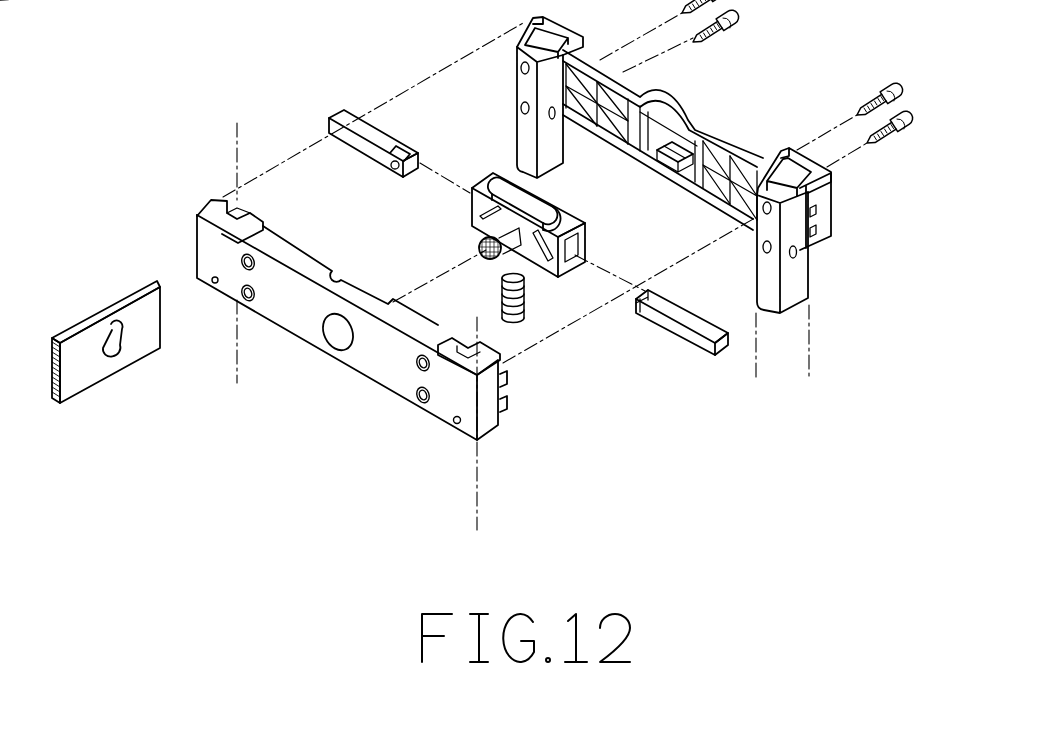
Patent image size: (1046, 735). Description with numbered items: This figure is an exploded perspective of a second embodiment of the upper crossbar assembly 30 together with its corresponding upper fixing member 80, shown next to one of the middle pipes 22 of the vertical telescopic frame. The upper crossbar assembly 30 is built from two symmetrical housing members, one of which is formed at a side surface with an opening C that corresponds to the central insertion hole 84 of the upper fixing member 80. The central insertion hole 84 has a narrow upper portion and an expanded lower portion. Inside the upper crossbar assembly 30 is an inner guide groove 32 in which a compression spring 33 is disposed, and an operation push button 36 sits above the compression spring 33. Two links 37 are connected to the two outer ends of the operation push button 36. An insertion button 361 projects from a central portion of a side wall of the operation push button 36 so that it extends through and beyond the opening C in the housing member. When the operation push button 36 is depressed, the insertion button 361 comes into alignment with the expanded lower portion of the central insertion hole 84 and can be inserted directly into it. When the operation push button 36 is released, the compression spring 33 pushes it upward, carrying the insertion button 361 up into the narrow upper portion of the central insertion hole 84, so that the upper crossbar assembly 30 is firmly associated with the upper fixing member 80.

The middle pipes 22 is at (800, 277).
The upper crossbar assembly 30 is at (282, 252).
The inner guide groove 32 is at (658, 163).
The compression spring 33 is at (523, 312).
The operation push button 36 is at (535, 200).
The insertion button 361 is at (480, 247).
The links 37 is at (377, 135).
The upper fixing member 80 is at (133, 292).
The central insertion hole 84 is at (115, 352).
The opening C is at (333, 322).